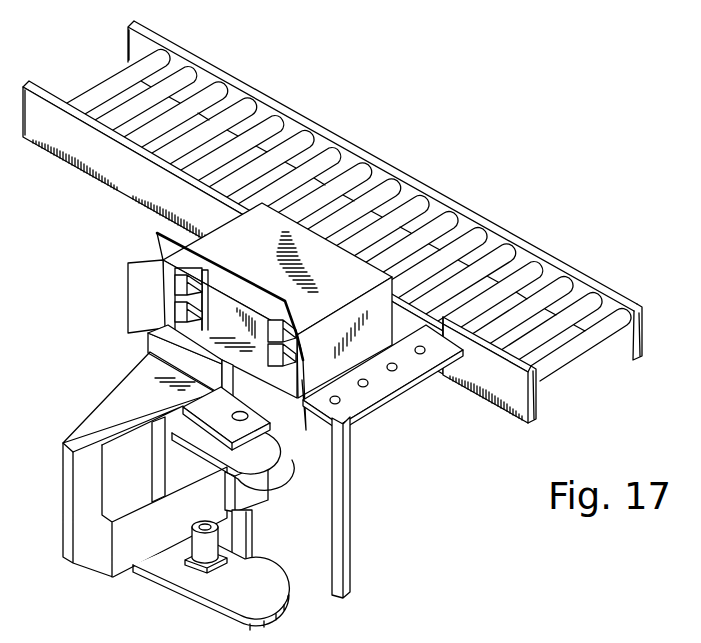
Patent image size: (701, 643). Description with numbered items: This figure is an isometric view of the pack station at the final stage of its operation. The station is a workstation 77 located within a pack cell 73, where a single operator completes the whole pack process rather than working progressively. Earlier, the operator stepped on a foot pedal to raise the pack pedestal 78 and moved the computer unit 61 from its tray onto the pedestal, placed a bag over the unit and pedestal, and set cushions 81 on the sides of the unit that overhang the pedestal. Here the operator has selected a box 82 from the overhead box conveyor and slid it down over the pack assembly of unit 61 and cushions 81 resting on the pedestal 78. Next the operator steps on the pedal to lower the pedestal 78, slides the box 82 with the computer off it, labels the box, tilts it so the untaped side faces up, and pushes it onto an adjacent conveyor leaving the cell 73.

The pack cell 73 is at (458, 150).
The box 82 is at (250, 242).
The cushions 81 is at (160, 298).
The chassis 61 is at (172, 323).
The pack pedestal 78 is at (148, 352).
The workstation 77 is at (299, 473).